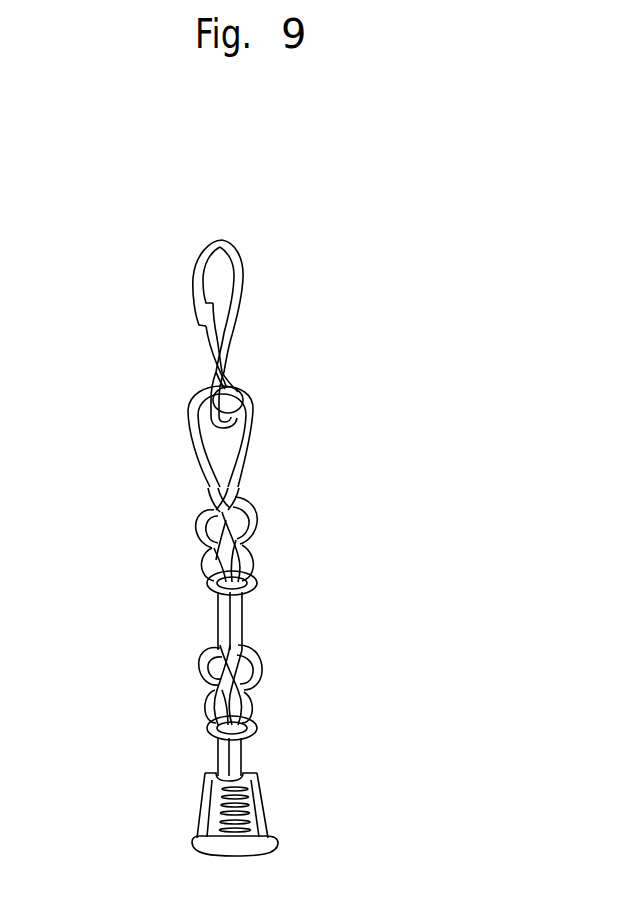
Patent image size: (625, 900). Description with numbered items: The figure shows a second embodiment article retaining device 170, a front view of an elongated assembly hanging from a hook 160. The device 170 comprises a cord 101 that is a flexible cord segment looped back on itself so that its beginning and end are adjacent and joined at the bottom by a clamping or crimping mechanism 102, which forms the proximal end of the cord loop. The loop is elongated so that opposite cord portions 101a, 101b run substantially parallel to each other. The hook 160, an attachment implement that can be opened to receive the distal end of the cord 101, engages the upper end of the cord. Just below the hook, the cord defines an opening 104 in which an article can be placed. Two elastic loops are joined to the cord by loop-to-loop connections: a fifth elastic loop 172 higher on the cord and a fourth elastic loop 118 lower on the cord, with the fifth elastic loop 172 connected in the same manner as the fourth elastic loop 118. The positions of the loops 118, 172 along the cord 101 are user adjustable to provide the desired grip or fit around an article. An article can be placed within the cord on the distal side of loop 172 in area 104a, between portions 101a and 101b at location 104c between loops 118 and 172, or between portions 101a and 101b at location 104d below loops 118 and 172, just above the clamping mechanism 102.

The article retaining device 170 is at (396, 246).
The hook 160 is at (221, 243).
The opening 104 is at (212, 447).
The end loop opening 104a is at (240, 450).
The cord 101 is at (247, 455).
The cord portion 101a is at (242, 490).
The cord portion 101b is at (205, 484).
The fifth elastic loop 172 is at (138, 553).
The location 104c is at (242, 621).
The fourth elastic loop 118 is at (181, 681).
The location 104d is at (238, 768).
The clamping or crimping mechanism 102 is at (262, 815).